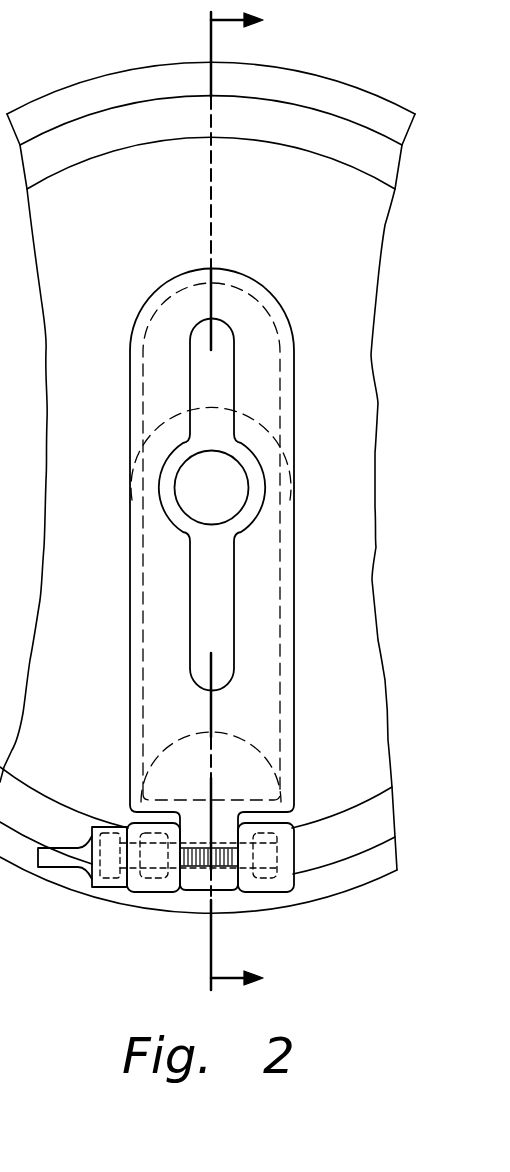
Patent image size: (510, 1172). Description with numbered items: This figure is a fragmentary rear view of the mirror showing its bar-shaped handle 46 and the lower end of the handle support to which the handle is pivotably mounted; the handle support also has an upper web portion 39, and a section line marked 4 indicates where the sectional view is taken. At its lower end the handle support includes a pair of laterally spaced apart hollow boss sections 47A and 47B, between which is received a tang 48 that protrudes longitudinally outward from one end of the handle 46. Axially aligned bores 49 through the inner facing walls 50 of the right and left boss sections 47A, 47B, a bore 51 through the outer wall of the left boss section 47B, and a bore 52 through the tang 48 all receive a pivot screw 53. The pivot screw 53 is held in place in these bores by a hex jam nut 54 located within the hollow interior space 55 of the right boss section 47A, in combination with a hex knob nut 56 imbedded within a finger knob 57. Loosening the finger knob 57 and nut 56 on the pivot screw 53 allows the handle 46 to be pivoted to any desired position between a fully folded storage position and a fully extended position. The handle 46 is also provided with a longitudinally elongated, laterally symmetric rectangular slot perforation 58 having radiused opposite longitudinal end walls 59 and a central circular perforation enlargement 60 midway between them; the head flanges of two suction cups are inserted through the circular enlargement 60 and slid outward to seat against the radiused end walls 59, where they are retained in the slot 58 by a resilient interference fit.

The section line 4- 4 is at (248, 501).
The upper web portion 39 is at (249, 498).
The handle 46 is at (294, 360).
The right boss section 47A is at (291, 880).
The left boss section 47B is at (135, 882).
The tang 48 is at (188, 812).
The bores 49 is at (160, 840).
The inner facing walls 50 is at (190, 832).
The bore 51 is at (118, 878).
The bore 52 is at (193, 876).
The pivot screw 53 is at (210, 892).
The hex jam nut 54 is at (257, 878).
The hollow interior space 55 is at (275, 864).
The hex knob nut 56 is at (110, 842).
The finger knob 57 is at (55, 872).
The rectangular slot perforation 58 is at (206, 366).
The radiused end walls 59 is at (210, 318).
The circular perforation enlargement 60 is at (250, 463).